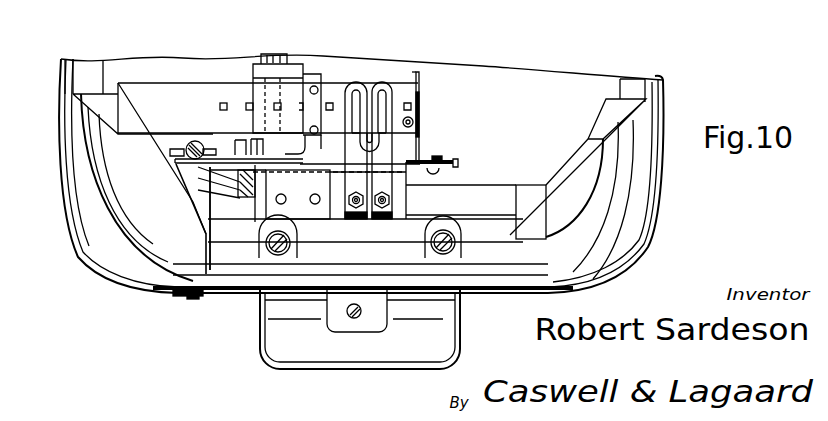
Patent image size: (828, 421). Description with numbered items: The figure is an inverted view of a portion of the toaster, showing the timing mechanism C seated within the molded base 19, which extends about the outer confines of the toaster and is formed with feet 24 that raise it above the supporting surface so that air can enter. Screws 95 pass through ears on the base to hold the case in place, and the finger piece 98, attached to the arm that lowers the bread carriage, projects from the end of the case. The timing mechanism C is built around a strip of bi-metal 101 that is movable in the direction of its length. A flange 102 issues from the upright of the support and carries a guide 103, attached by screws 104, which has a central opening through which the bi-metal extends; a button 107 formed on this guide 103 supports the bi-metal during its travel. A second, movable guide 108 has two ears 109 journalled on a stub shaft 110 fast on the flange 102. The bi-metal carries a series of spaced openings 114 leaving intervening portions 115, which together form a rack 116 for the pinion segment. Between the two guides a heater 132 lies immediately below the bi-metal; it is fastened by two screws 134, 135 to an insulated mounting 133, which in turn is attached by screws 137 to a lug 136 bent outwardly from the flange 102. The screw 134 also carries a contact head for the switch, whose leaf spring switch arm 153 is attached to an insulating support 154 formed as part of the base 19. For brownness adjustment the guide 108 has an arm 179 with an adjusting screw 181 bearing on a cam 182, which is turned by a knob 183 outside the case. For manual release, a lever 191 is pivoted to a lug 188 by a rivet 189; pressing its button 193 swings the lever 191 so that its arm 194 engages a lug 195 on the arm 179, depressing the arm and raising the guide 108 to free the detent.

The base 19 is at (662, 82).
The feet 24 is at (140, 220).
The screws 95 is at (262, 248).
The finger piece 98 is at (333, 368).
The strip of bi-metal 101 is at (160, 94).
The flange 102 is at (450, 163).
The guide 103 is at (418, 78).
The screws 104 is at (428, 157).
The button 107 is at (410, 118).
The guide 108 is at (305, 71).
The ears 109 is at (288, 62).
The stub shaft 110 is at (272, 52).
The openings 114 is at (221, 100).
The intervening portions 115 is at (250, 100).
The rack 116 is at (240, 107).
The heater 132 is at (380, 86).
The insulated mounting 133 is at (420, 216).
The screw 134 is at (380, 206).
The screw 135 is at (346, 202).
The lug 136 is at (300, 217).
The screws 137 is at (283, 200).
The leaf spring switch arm 153 is at (473, 198).
The insulating support 154 is at (524, 186).
The arm 179 is at (222, 147).
The adjusting screw 181 is at (186, 146).
The cam 182 is at (178, 153).
The knob 183 is at (186, 295).
The lug 188 is at (243, 205).
The rivet 189 is at (205, 183).
The lever 191 is at (224, 193).
The button 193 is at (168, 289).
The arm 194 is at (233, 181).
The lug 195 is at (238, 138).
The timing mechanism C is at (416, 75).